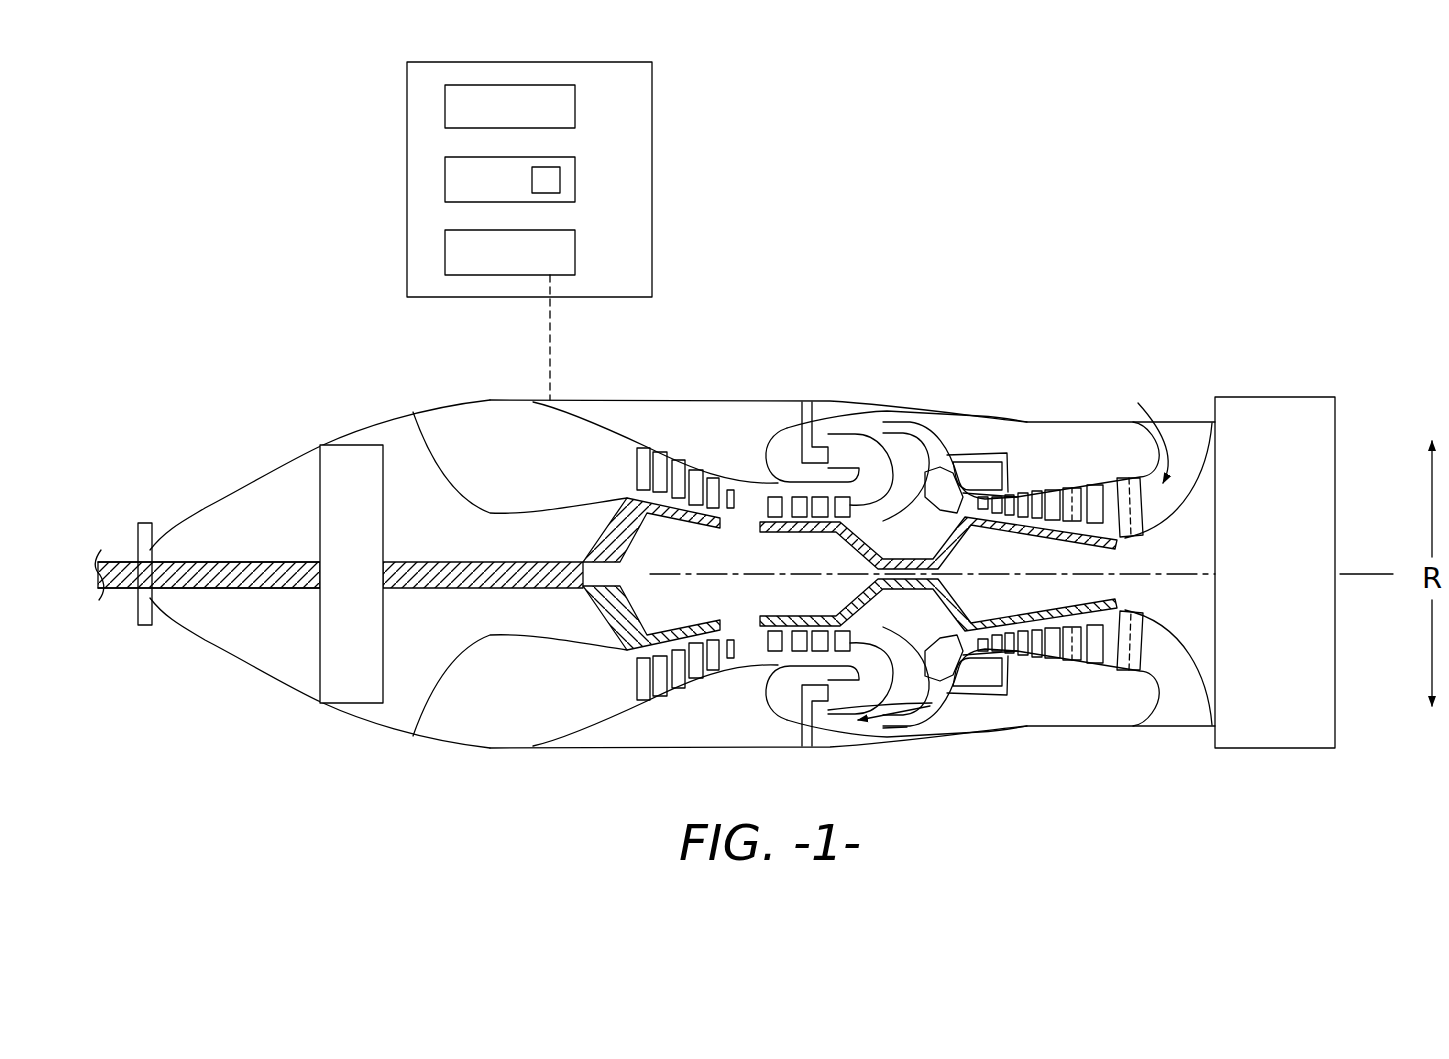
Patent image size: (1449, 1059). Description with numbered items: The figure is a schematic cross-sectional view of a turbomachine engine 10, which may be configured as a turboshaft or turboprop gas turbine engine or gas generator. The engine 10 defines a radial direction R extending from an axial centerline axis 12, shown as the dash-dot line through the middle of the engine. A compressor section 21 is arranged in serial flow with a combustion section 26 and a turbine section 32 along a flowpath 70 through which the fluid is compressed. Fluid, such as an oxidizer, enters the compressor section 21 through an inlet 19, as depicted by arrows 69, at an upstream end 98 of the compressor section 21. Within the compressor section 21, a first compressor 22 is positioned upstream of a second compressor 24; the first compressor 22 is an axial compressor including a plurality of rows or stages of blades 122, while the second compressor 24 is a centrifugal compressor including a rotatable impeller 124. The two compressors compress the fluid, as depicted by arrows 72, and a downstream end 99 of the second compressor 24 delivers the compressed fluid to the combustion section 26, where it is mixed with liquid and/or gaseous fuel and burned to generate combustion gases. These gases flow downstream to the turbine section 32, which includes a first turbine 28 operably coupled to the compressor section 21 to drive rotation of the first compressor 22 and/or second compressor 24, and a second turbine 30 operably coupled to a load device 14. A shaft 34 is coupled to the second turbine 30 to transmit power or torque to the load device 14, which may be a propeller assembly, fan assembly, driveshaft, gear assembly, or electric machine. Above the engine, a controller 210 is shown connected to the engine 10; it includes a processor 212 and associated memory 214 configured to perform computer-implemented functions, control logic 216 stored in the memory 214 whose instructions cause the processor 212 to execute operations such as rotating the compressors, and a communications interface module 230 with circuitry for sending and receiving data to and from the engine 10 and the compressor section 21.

The turbomachine engine 10 is at (938, 285).
The axial centerline axis 12 is at (1343, 574).
The load device 14 is at (335, 540).
The inlet 19 is at (1172, 418).
The compressor section 21 is at (1037, 470).
The first compressor 22 is at (1063, 667).
The second compressor 24 is at (957, 690).
The combustion section 26 is at (858, 460).
The first turbine 28 is at (797, 538).
The second turbine 30 is at (697, 447).
The turbine section 32 is at (753, 453).
The shaft 34 is at (562, 560).
The arrows 69 is at (1147, 432).
The flowpath 70 is at (1275, 572).
The arrows 72 is at (912, 718).
The upstream end 98 is at (1172, 392).
The downstream end 99 is at (473, 389).
The blades 122 is at (1105, 612).
The impeller 124 is at (945, 653).
The controller 210 is at (655, 167).
The processor 212 is at (488, 123).
The memory 214 is at (466, 196).
The control logic 216 is at (562, 180).
The communications interface module 230 is at (488, 268).